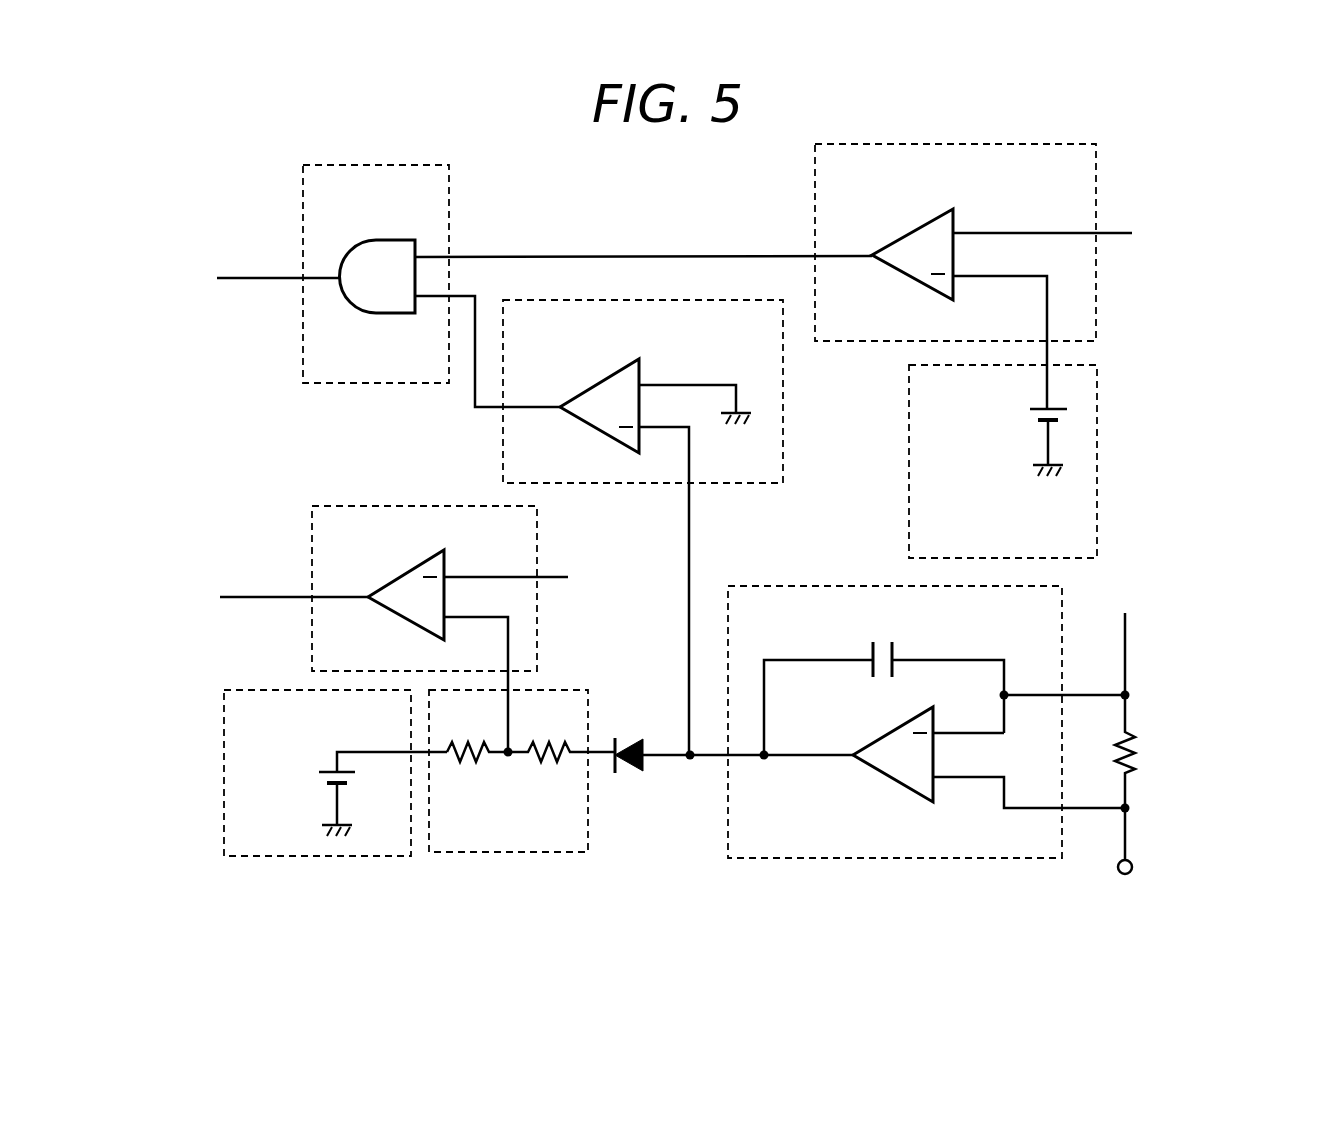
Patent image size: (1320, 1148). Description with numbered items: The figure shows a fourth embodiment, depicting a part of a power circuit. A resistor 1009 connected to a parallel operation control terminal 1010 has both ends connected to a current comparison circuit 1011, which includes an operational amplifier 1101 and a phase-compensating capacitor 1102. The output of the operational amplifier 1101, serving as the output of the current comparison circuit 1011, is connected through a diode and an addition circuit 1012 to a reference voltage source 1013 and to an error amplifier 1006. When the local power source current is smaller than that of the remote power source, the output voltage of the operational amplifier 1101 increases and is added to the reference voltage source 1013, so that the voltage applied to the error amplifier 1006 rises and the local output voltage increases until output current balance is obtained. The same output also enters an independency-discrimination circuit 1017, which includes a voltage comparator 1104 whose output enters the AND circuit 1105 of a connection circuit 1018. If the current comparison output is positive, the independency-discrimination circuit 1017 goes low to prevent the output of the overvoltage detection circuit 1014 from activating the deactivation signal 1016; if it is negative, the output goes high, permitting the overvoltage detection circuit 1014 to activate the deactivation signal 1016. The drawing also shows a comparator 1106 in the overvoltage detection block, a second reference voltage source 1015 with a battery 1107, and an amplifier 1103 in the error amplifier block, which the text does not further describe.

The deactivation signal 1016 is at (263, 279).
The connection circuit 1018 is at (449, 203).
The AND circuit 1105 is at (385, 314).
The independency-discrimination circuit 1017 is at (665, 298).
The voltage comparator 1104 is at (590, 425).
The overvoltage detection circuit 1014 is at (1096, 193).
The comparator 1106 is at (903, 277).
The reference voltage source 1015 is at (909, 478).
The reference voltage battery 1107 is at (1035, 418).
The error amplifier 1006 is at (537, 540).
The error amplifier 1103 is at (375, 605).
The reference voltage source 1013 is at (303, 856).
The addition circuit 1012 is at (507, 852).
The current comparison circuit 1011 is at (950, 858).
The phase-compensating capacitor 1102 is at (865, 650).
The operational amplifier 1101 is at (888, 780).
The resistor 1009 is at (1135, 752).
The parallel operation control terminal 1010 is at (1133, 865).